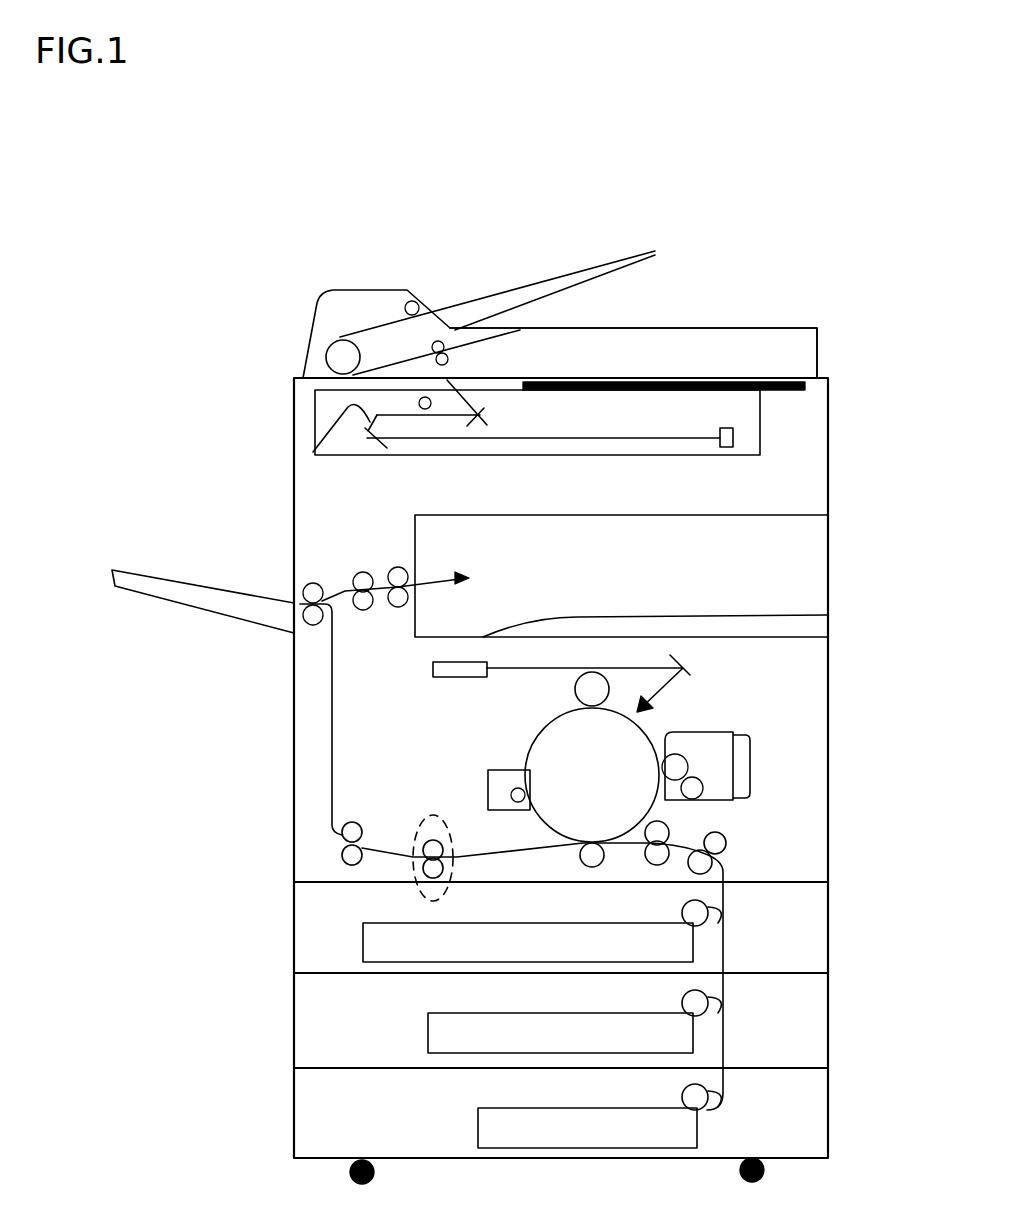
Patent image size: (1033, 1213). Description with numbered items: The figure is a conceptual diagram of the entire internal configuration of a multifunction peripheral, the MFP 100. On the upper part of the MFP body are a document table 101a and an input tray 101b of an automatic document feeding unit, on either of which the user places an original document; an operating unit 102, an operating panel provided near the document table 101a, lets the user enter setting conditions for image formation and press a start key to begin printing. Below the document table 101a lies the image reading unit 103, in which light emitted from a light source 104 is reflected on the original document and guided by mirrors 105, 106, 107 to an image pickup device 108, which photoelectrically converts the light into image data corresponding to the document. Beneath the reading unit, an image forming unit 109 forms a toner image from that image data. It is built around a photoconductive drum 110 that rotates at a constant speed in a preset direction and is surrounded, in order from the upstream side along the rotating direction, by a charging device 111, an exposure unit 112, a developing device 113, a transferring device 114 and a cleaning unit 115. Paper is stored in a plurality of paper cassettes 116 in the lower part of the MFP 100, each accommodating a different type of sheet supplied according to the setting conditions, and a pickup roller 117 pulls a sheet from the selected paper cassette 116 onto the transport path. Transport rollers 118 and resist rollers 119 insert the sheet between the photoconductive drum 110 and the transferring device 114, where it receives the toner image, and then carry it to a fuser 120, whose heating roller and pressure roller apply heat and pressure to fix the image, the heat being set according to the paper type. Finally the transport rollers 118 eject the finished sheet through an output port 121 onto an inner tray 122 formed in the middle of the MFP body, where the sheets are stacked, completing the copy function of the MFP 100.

The MFP 100 is at (563, 250).
The document table 101a is at (675, 377).
The input tray 101b is at (462, 302).
The operating unit 102 is at (770, 380).
The image reading unit 103 is at (283, 458).
The light source 104 is at (432, 401).
The mirror 105 is at (480, 415).
The mirror 106 is at (313, 452).
The mirror 107 is at (372, 452).
The image pickup device 108 is at (732, 427).
The image forming unit 109 is at (280, 860).
The photoconductive drum 110 is at (548, 752).
The charging device 111 is at (580, 688).
The exposure unit 112 is at (433, 667).
The developing device 113 is at (750, 748).
The transferring device 114 is at (583, 852).
The cleaning unit 115 is at (488, 778).
The paper cassette 116 is at (368, 953).
The pickup roller 117 is at (700, 912).
The transport roller 118 is at (337, 835).
The resist roller 119 is at (650, 857).
The fuser 120 is at (425, 872).
The output port 121 is at (420, 563).
The inner tray 122 is at (540, 625).